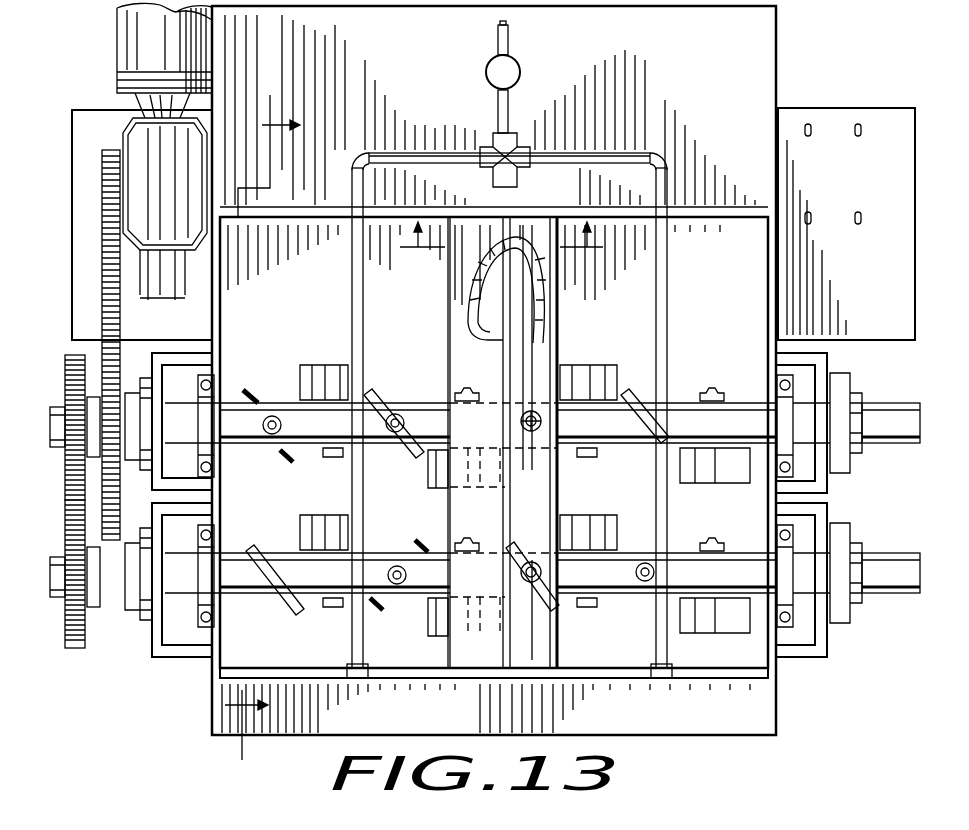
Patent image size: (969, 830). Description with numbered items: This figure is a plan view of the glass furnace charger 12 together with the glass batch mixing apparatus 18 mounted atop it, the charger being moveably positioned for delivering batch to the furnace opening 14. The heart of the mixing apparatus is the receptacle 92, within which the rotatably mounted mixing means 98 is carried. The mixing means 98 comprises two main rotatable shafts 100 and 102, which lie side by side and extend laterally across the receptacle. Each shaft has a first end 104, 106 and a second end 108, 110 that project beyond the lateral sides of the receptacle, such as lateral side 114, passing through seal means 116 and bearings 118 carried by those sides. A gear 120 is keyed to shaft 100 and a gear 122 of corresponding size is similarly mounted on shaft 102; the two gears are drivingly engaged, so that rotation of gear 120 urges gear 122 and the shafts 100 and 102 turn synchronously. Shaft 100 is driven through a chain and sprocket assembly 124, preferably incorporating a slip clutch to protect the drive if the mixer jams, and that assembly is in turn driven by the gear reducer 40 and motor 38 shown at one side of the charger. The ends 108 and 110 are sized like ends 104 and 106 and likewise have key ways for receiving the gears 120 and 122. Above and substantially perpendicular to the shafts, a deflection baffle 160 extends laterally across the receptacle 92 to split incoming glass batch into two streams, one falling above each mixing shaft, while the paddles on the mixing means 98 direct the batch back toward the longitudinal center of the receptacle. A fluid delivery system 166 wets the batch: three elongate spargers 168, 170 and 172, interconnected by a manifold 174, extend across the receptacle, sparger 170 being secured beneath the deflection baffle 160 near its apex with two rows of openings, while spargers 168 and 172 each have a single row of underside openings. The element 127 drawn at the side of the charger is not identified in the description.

The glass furnace charger 12 is at (88, 112).
The motor 38 is at (128, 40).
The gear reducer 40 is at (172, 188).
The furnace opening 14 is at (258, 138).
The glass batch mixing apparatus 18 is at (430, 293).
The receptacle 92 is at (488, 682).
The rotatably mounted mixing means 98 is at (417, 606).
The rotatable shaft 100 is at (427, 406).
The rotatable shaft 102 is at (436, 549).
The first end of shaft 100 104 is at (50, 426).
The first end of shaft 102 106 is at (50, 578).
The second end of shaft 100 108 is at (897, 408).
The second end of shaft 102 110 is at (897, 555).
The lateral side of receptacle 114 is at (797, 518).
The seal means 116 is at (208, 388).
The bearings 118 is at (133, 382).
The gear 120 is at (65, 372).
The gear 122 is at (62, 622).
The chain and sprocket assembly 124 is at (65, 491).
The side panel 127 is at (878, 118).
The deflection baffle 160 is at (465, 359).
The fluid delivery system 166 is at (565, 62).
The elongate sparger 168 is at (348, 272).
The elongate sparger 170 is at (492, 333).
The elongate sparger 172 is at (670, 269).
The manifold 174 is at (437, 155).